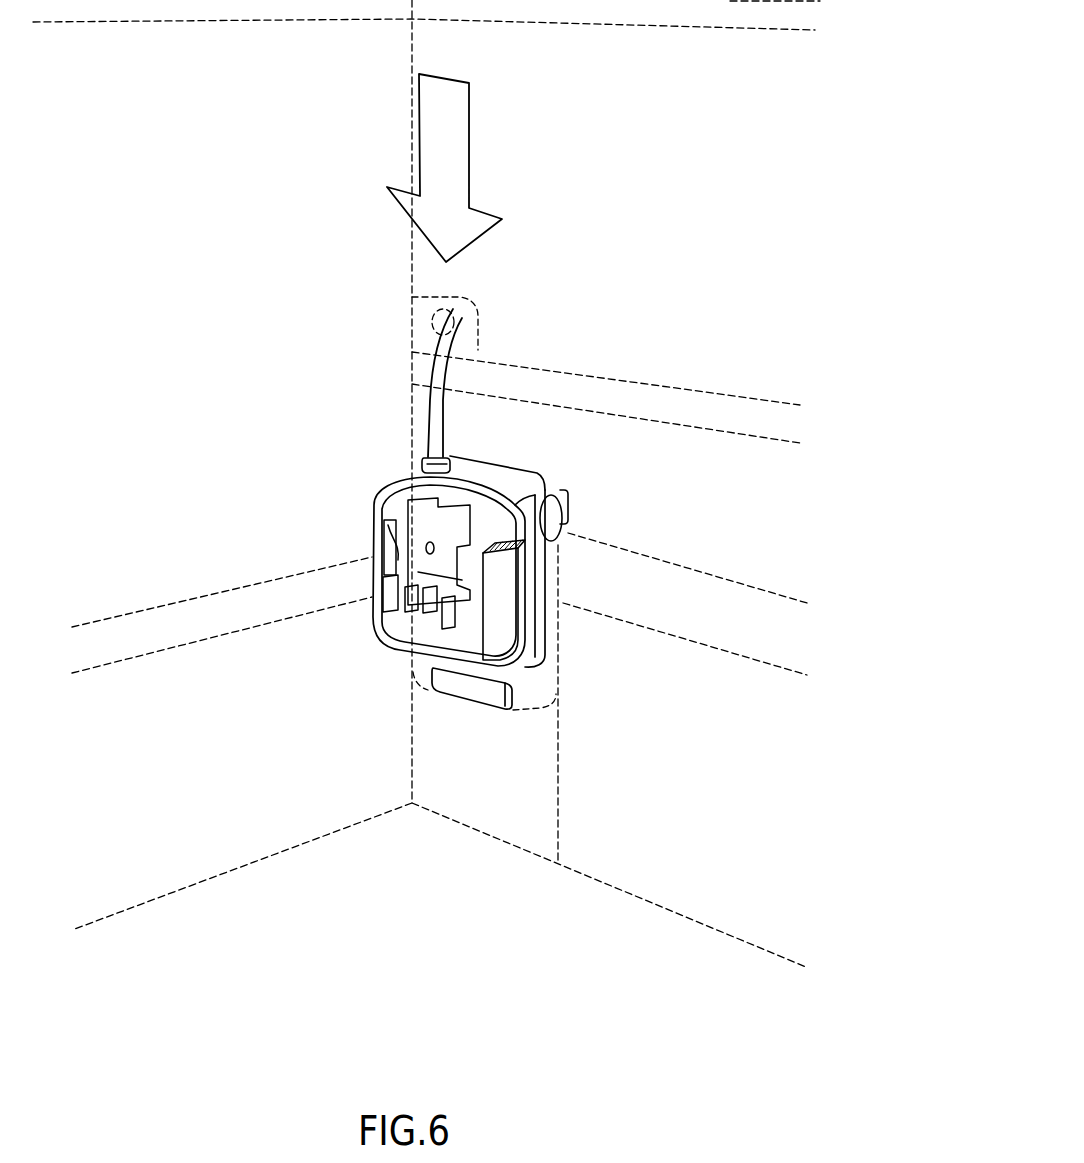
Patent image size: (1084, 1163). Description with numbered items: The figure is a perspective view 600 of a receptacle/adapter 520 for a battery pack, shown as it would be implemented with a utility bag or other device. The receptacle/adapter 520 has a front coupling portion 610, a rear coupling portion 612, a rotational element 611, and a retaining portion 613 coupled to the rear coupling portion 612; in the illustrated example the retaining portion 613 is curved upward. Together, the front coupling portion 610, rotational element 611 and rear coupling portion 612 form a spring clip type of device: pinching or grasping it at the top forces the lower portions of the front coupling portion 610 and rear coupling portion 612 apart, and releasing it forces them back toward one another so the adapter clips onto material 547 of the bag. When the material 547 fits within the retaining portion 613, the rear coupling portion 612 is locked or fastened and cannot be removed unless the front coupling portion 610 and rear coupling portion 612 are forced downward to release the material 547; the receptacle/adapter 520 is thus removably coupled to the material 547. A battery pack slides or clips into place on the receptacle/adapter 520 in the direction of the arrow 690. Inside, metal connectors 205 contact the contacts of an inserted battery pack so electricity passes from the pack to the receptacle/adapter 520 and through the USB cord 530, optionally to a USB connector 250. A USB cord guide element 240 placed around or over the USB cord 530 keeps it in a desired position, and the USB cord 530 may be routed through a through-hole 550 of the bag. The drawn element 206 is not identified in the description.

The arrow 690 is at (470, 127).
The perspective view 600 is at (668, 166).
The through-hole 550 is at (441, 313).
The USB cord 530 is at (437, 385).
The USB cord guide element 240 is at (422, 464).
The front coupling portion 610 is at (520, 487).
The rotational element 611 is at (551, 513).
The rear coupling portion 612 is at (566, 519).
The receptacle/adapter 520 is at (372, 513).
The side contact 206 is at (388, 567).
The metal connectors 205 is at (413, 597).
The USB connector 250 is at (503, 590).
The retaining portion 613 is at (477, 683).
The material 547 is at (537, 680).